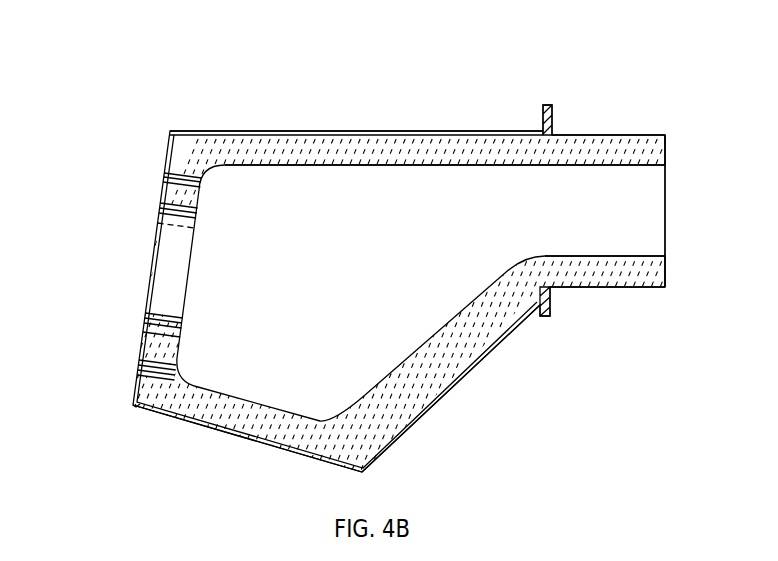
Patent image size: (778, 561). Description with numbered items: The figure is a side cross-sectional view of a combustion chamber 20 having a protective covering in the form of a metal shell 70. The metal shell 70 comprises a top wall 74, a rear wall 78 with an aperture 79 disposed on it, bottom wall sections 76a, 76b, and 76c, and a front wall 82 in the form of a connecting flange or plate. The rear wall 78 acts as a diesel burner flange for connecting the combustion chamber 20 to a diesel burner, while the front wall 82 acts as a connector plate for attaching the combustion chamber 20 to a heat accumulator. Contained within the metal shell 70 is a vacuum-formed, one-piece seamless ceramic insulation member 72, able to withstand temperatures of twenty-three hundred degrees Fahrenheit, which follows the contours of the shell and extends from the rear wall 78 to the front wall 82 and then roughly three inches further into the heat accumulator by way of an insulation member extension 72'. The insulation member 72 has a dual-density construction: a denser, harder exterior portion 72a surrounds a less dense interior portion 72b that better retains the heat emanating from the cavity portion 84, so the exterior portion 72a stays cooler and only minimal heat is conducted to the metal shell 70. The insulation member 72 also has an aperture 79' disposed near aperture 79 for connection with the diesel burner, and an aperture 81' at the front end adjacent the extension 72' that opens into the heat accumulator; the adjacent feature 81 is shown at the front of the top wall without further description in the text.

The combustion chamber 20 is at (122, 115).
The metal shell 70 is at (307, 126).
The insulation member 72 is at (416, 282).
The exterior portion 72a is at (193, 140).
The interior portion 72b is at (288, 152).
The insulation member extension 72' is at (649, 217).
The top wall 74 is at (420, 132).
The bottom wall section 76a is at (231, 437).
The bottom wall section 76b is at (466, 375).
The bottom wall section 76c is at (606, 289).
The rear wall 78 is at (133, 384).
The aperture 79 is at (160, 260).
The aperture 79' is at (141, 304).
The top outer surface 81 is at (608, 115).
The aperture 81' is at (676, 211).
The front wall 82 is at (543, 119).
The cavity portion 84 is at (346, 289).